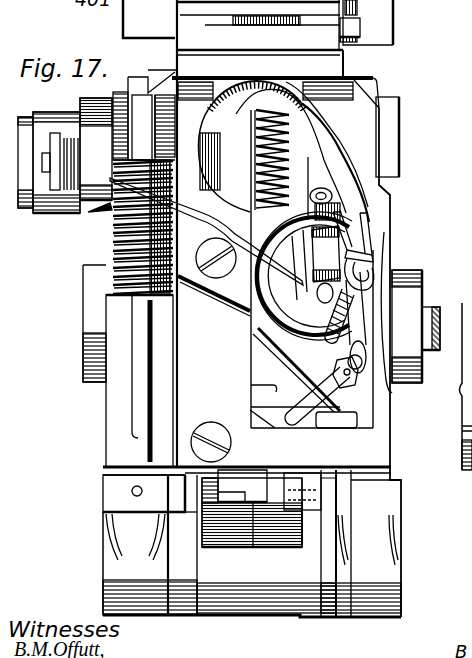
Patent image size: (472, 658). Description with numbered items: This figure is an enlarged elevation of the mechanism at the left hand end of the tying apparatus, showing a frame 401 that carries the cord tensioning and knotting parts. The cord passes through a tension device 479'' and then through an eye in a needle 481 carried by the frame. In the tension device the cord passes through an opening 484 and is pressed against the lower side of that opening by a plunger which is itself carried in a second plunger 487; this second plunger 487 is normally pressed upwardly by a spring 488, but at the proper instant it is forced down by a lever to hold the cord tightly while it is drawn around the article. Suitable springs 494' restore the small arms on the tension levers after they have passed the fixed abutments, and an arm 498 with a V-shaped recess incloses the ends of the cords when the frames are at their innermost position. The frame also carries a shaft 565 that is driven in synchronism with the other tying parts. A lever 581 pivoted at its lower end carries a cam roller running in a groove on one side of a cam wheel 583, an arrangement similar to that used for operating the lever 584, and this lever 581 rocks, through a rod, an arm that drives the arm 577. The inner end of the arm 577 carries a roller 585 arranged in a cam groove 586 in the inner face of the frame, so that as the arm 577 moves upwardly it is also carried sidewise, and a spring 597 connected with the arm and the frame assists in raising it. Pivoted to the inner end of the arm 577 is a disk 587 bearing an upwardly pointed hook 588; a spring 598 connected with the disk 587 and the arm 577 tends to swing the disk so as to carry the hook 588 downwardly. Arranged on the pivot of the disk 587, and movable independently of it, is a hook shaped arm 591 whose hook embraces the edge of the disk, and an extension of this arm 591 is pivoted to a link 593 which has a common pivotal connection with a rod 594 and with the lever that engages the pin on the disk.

The frame 401 is at (93, 5).
The spring 494' is at (97, 141).
The spring 488 is at (113, 229).
The second plunger 487 is at (113, 254).
The arm 498 is at (186, 211).
The spring 597 is at (270, 106).
The cam groove 586 is at (328, 153).
The hook 588 is at (356, 214).
The disk 587 is at (353, 249).
The hook shaped arm 591 is at (379, 268).
The shaft 565 is at (432, 330).
The spring 598 is at (240, 306).
The roller 585 is at (316, 314).
The arm 577 is at (303, 287).
The link 593 is at (387, 368).
The rod 594 is at (315, 400).
The needle 481 is at (252, 502).
The opening 484 is at (131, 491).
The tension device 479'' is at (108, 499).
The cam wheel 583 is at (233, 527).
The lever 581 is at (180, 590).
The lever 584 is at (326, 600).